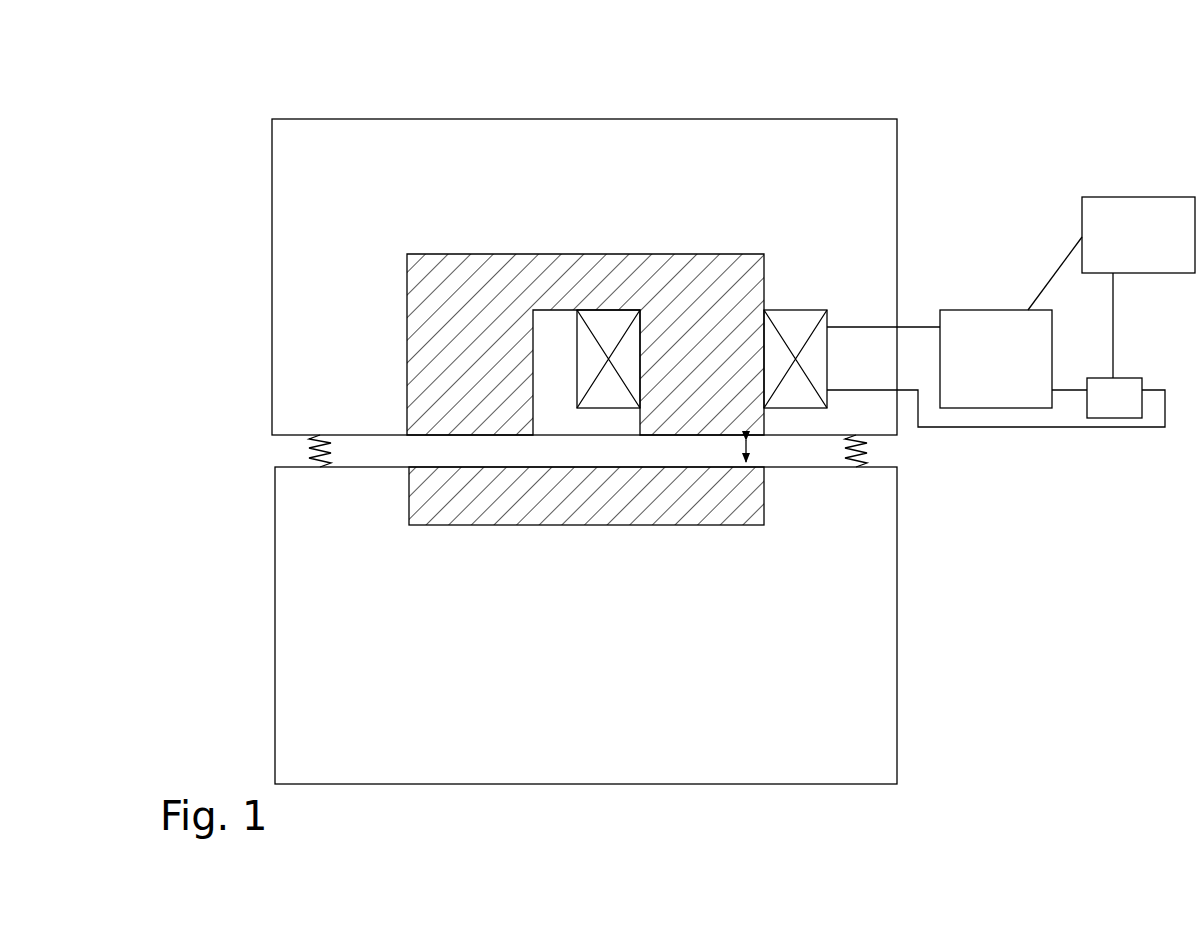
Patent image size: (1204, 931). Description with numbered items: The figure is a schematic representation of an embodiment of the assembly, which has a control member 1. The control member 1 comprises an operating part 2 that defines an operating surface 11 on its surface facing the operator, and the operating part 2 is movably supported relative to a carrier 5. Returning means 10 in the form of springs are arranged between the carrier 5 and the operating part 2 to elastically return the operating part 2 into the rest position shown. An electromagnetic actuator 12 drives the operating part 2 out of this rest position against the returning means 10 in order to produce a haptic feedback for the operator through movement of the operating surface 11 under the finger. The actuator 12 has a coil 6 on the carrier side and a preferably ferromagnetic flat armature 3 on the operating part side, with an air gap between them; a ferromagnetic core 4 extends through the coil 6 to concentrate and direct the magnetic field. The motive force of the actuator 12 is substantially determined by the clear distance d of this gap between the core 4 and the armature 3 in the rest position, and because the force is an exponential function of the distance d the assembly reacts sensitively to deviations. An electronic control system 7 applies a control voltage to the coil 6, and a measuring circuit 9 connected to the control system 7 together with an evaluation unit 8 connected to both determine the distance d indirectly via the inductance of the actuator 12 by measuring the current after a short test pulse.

The control member 1 is at (350, 110).
The operating part 2 is at (886, 692).
The armature 3 is at (768, 497).
The ferromagnetic core 4 is at (720, 255).
The carrier 5 is at (440, 131).
The coil 6 is at (797, 318).
The electronic control system 7 is at (977, 320).
The evaluation unit 8 is at (1118, 207).
The measuring circuit 9 is at (1128, 386).
The returning means 10 is at (300, 450).
The operating surface 11 is at (658, 788).
The electromagnetic actuator 12 is at (404, 345).
The clear distance d is at (756, 454).